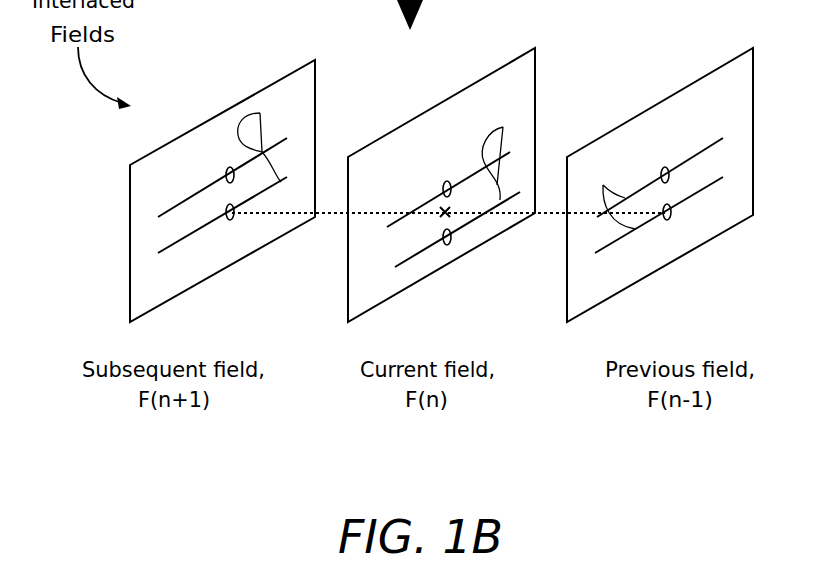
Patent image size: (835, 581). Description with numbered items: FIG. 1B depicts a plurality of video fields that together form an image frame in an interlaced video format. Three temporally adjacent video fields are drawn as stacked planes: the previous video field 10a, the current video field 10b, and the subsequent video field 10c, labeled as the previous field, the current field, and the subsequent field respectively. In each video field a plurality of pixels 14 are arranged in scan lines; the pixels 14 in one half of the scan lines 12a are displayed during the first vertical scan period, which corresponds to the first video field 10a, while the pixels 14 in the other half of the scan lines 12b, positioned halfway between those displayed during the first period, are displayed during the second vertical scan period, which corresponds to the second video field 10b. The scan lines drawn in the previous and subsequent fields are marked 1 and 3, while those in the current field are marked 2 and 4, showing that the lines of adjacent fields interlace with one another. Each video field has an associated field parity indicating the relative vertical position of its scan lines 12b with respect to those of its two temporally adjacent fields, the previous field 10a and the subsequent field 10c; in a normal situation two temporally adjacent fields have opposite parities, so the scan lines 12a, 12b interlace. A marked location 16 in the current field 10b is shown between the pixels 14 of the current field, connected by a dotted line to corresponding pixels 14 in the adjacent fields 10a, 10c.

The scan line 1 is at (441, 183).
The scan line 2 is at (438, 198).
The scan line 3 is at (441, 217).
The scan line 4 is at (447, 237).
The first video field 10a is at (567, 307).
The second video field 10b is at (348, 308).
The subsequent video field 10c is at (130, 307).
The scan lines 12a is at (260, 113).
The scan lines 12b is at (506, 151).
The pixels 14 is at (224, 213).
The missing pixel to be interpolated 16 is at (447, 213).